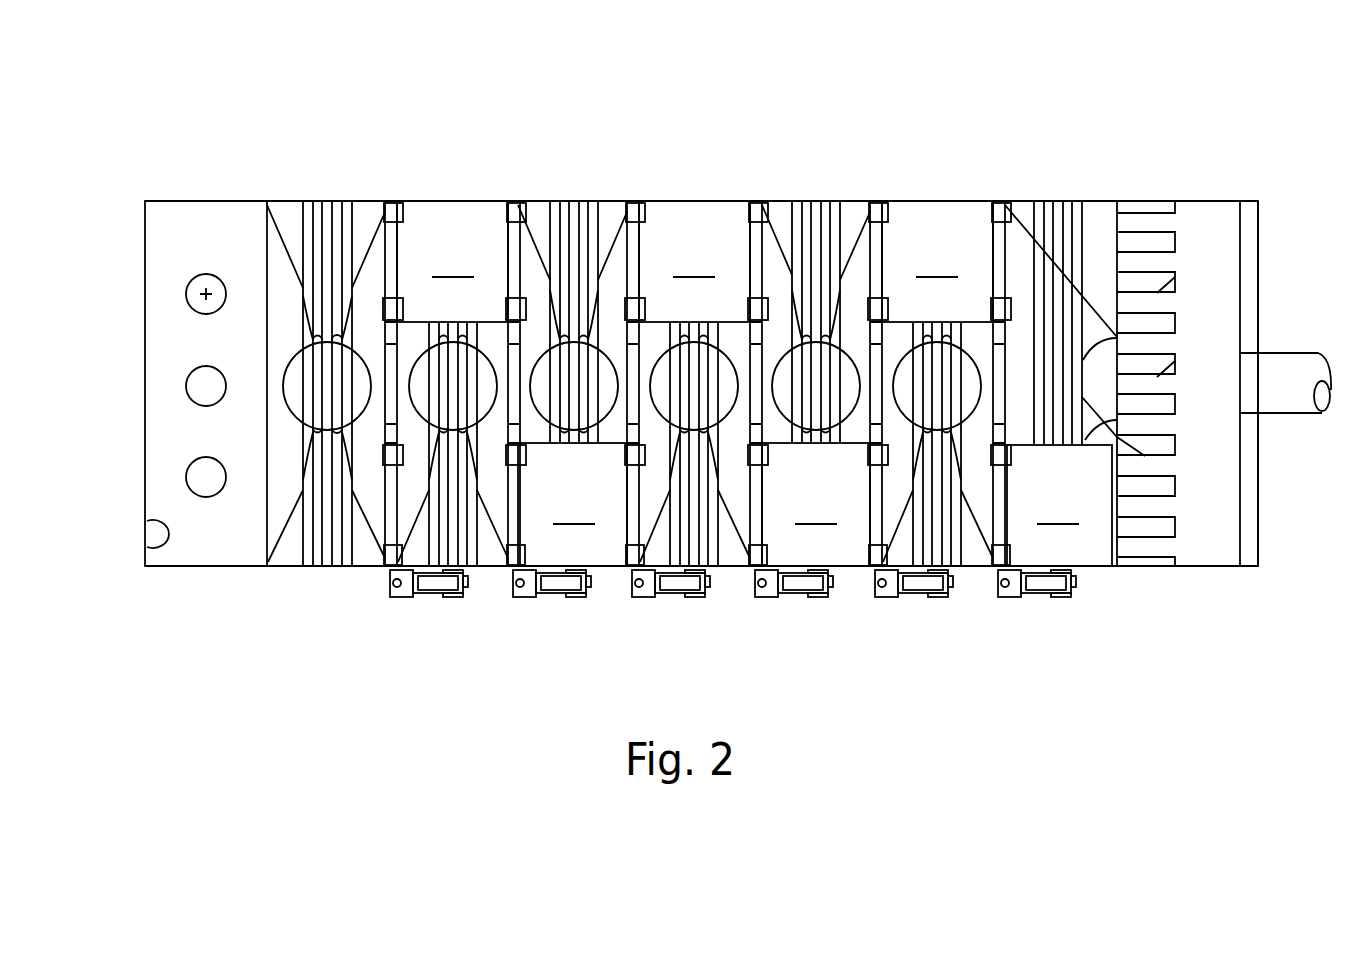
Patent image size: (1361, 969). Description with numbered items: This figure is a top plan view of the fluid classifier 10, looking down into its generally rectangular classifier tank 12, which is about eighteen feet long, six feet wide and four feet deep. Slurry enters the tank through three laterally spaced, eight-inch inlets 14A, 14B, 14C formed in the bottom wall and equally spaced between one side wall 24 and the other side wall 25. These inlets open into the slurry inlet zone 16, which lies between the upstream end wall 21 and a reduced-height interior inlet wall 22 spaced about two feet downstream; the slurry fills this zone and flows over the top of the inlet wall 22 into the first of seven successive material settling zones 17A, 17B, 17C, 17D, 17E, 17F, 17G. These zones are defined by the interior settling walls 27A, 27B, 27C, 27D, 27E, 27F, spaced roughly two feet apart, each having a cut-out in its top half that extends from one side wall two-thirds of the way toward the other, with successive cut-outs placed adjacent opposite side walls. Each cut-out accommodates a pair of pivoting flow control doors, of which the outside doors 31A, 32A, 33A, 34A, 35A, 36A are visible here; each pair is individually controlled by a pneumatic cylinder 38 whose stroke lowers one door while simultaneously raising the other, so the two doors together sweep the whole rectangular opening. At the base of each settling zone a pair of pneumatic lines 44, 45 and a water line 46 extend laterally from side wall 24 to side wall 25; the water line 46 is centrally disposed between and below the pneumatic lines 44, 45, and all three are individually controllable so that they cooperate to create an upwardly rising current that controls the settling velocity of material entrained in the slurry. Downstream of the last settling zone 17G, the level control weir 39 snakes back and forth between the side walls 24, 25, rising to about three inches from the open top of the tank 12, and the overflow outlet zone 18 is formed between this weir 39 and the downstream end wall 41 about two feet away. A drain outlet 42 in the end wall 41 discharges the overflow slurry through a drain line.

The classifier 10 is at (100, 160).
The classifier tank 12 is at (1290, 190).
The inlet 14A is at (186, 480).
The inlet 14B is at (186, 386).
The inlet 14C is at (186, 296).
The slurry inlet zone 16 is at (212, 582).
The material settling zone 17A is at (329, 363).
The material settling zone 17B is at (452, 328).
The material settling zone 17C is at (572, 328).
The material settling zone 17D is at (694, 328).
The material settling zone 17E is at (816, 328).
The material settling zone 17F is at (937, 328).
The material settling zone 17G is at (1090, 328).
The overflow outlet zone 18 is at (1184, 582).
The upstream end wall 21 is at (147, 521).
The interior inlet wall 22 is at (252, 228).
The side wall 24 is at (290, 568).
The side wall 25 is at (175, 199).
The interior settling wall 27A is at (390, 512).
The interior settling wall 27B is at (520, 252).
The interior settling wall 27C is at (631, 512).
The interior settling wall 27D is at (766, 252).
The interior settling wall 27E is at (866, 512).
The interior settling wall 27F is at (1010, 252).
The pivoting flow control door 31A is at (439, 183).
The pivoting flow control door 32A is at (572, 504).
The pivoting flow control door 33A is at (695, 183).
The pivoting flow control door 34A is at (816, 504).
The pivoting flow control door 35A is at (952, 183).
The pivoting flow control door 36A is at (1059, 505).
The pneumatic cylinder 38 is at (551, 598).
The level control weir 39 is at (1177, 328).
The downstream end wall 41 is at (1233, 511).
The drain outlet 42 is at (1240, 398).
The pneumatic line 44 is at (268, 483).
The pneumatic line 45 is at (347, 212).
The water line 46 is at (323, 518).